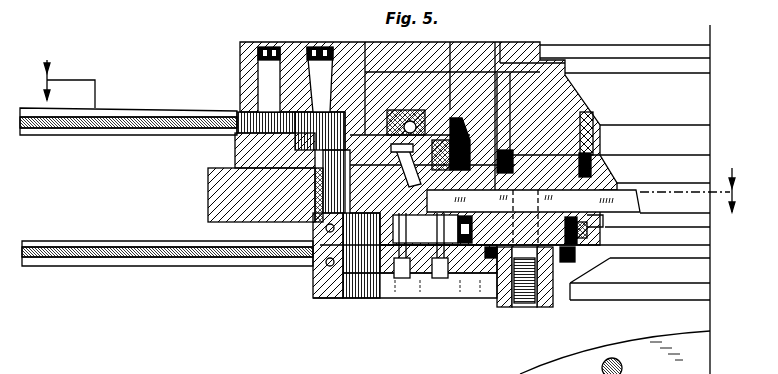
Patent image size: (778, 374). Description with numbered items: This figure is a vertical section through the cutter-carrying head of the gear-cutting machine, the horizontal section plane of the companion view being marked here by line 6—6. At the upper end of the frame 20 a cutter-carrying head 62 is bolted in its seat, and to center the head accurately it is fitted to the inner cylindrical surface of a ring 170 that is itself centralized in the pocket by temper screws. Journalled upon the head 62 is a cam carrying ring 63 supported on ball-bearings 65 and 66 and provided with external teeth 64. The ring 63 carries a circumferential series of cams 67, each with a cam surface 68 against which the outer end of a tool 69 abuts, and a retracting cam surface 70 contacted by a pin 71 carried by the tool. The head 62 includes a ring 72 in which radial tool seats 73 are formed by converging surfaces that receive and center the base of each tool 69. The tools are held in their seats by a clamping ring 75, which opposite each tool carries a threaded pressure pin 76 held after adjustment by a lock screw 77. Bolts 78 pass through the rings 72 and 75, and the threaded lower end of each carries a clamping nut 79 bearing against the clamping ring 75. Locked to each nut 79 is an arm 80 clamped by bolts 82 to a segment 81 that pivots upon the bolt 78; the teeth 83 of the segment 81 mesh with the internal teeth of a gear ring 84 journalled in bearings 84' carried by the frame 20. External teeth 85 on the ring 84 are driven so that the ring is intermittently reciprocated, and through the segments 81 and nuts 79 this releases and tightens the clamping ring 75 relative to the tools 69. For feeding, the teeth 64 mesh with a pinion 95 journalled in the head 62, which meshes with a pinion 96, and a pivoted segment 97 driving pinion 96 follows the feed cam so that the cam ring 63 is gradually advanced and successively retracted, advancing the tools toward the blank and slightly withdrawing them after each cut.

The section line 6— 6 is at (390, 136).
The frame 20 is at (208, 210).
The cutter-carrying head 62 is at (553, 45).
The cam carrying ring 63 is at (318, 230).
The external teeth 64 is at (368, 70).
The ball-bearing 65 is at (410, 110).
The ball-bearing 66 is at (455, 116).
The cam 67 is at (416, 190).
The cam surface 68 is at (408, 278).
The tool 69 is at (641, 205).
The retracting cam surface 70 is at (534, 218).
The pin 71 is at (498, 150).
The ring 72 is at (610, 173).
The tool seat 73 is at (620, 183).
The clamping ring 75 is at (563, 252).
The threaded pressure pin 76 is at (570, 245).
The lock screw 77 is at (590, 228).
The bolt 78 is at (527, 308).
The clamping nut 79 is at (513, 307).
The arm 80 is at (490, 272).
The segment 81 is at (380, 298).
The bolt 82 is at (440, 278).
The teeth 83 is at (372, 298).
The gear ring 84 is at (346, 315).
The bearing 84' is at (312, 276).
The external teeth 85 is at (313, 266).
The pinion 95 is at (334, 62).
The pinion 96 is at (240, 113).
The segment 97 is at (127, 137).
The ring 170 is at (235, 152).